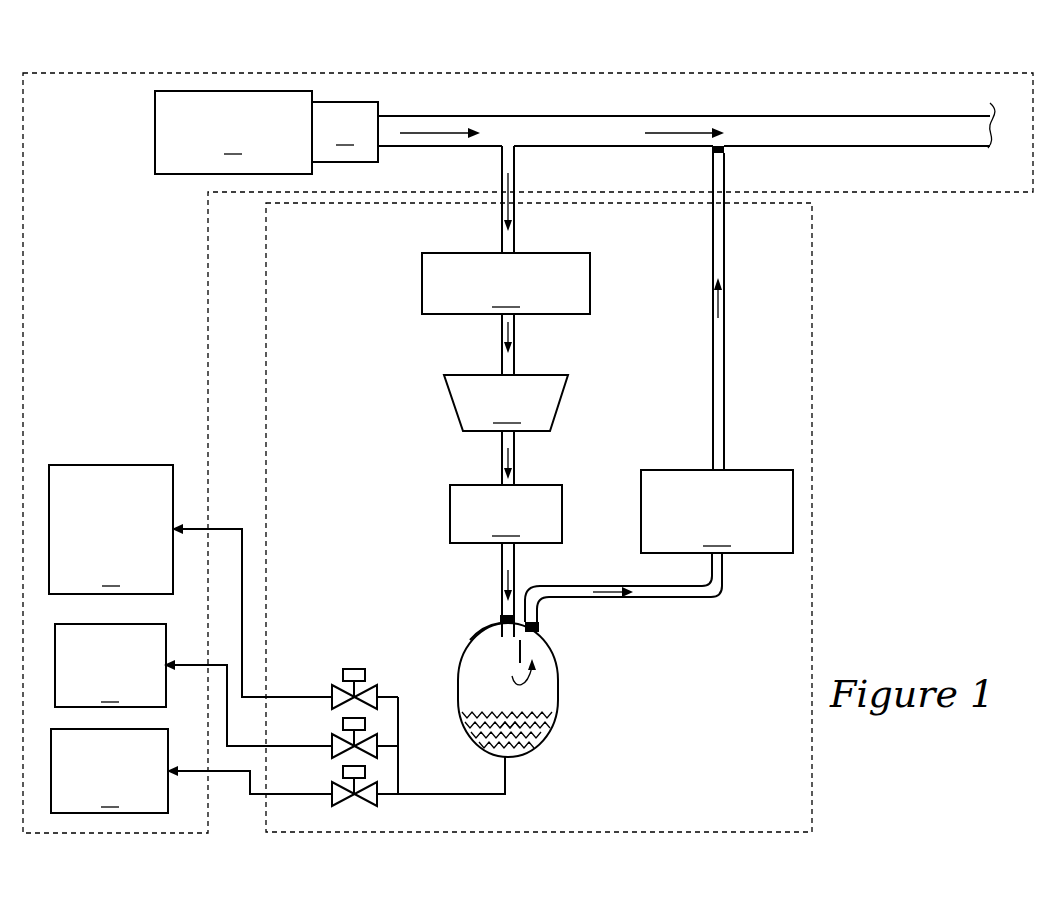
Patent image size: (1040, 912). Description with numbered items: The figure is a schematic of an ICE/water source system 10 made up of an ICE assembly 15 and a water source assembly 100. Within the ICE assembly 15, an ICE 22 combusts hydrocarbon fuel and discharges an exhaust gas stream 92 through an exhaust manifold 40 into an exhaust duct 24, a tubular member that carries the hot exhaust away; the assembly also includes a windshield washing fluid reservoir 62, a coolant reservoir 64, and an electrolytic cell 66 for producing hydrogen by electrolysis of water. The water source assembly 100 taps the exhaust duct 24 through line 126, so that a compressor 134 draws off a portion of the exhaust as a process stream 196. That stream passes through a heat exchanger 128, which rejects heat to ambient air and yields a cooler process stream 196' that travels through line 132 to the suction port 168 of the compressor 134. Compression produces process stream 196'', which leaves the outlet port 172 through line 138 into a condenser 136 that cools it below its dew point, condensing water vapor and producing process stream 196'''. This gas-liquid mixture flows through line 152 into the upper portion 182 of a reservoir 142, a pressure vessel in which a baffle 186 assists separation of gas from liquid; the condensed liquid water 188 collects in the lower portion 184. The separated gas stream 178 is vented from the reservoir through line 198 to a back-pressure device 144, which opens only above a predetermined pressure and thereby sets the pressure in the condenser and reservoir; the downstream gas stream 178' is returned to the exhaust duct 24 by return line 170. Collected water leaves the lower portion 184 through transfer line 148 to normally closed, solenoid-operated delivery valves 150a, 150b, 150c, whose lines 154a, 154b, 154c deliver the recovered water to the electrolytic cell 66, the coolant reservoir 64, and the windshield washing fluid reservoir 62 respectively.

The ICE/water source system 10 is at (900, 272).
The ICE assembly 15 is at (704, 71).
The ICE 22 is at (233, 132).
The exhaust duct 24 is at (585, 116).
The exhaust manifold 40 is at (345, 132).
The windshield washing fluid reservoir 62 is at (111, 529).
The coolant reservoir 64 is at (110, 665).
The electrolytic cell 66 is at (109, 771).
The exhaust gas stream 92 is at (417, 135).
The water source assembly 100 is at (820, 476).
The line 126 is at (500, 227).
The heat exchanger 128 is at (506, 283).
The line 132 is at (502, 333).
The compressor 134 is at (506, 403).
The condenser 136 is at (506, 514).
The line 138 is at (515, 452).
The reservoir 142 is at (568, 707).
The back-pressure device 144 is at (717, 511).
The transfer line 148 is at (418, 797).
The delivery valve 150a is at (372, 782).
The delivery valve 150b is at (372, 735).
The delivery valve 150c is at (372, 684).
The line 152 is at (502, 564).
The interconnecting line 154a is at (220, 771).
The interconnecting line 154b is at (228, 687).
The interconnecting line 154c is at (243, 562).
The suction port 168 is at (515, 376).
The return line 170 is at (722, 360).
The outlet port 172 is at (502, 437).
The gas stream 178 is at (569, 649).
The gas stream 178' is at (697, 308).
The upper portion 182 is at (480, 628).
The lower portion 184 is at (553, 735).
The baffle 186 is at (523, 647).
The liquid water 188 is at (512, 735).
The process stream 196 is at (555, 199).
The process stream 196' is at (572, 344).
The process stream 196'' is at (453, 466).
The process stream 196''' is at (563, 583).
The interconnecting line 198 is at (665, 597).